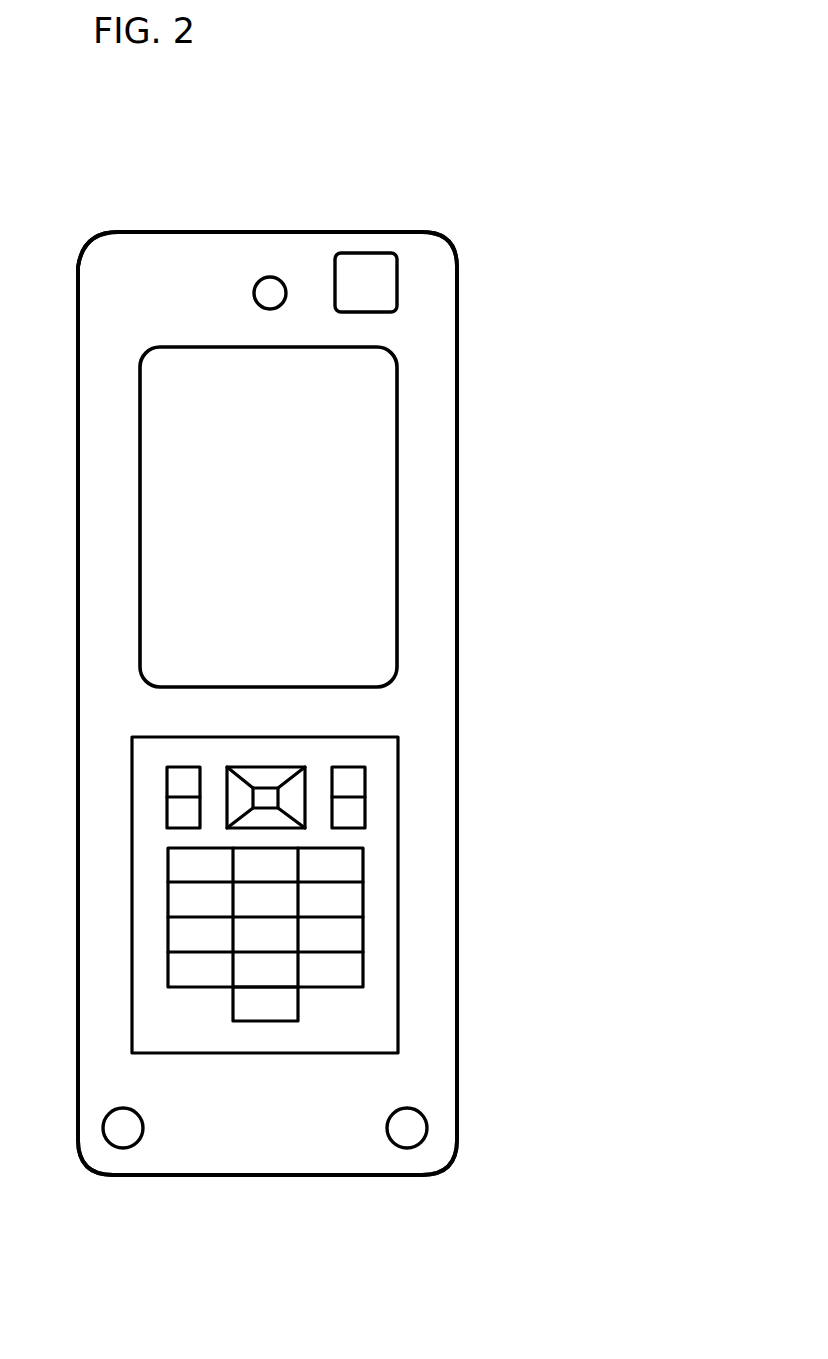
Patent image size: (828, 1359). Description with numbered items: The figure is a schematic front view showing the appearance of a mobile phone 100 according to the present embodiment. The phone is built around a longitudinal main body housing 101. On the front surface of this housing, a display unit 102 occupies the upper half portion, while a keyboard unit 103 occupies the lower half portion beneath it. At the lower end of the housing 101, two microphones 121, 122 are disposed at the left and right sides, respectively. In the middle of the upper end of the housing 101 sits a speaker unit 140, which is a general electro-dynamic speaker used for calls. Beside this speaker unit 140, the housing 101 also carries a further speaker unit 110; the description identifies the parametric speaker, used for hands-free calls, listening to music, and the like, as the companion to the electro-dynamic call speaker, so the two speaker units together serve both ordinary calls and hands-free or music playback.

The mobile phone 100 is at (553, 253).
The main body housing 101 is at (157, 232).
The display unit 102 is at (383, 495).
The keyboard unit 103 is at (398, 893).
The speaker unit 110 is at (388, 253).
The microphone 121 is at (125, 1147).
The microphone 122 is at (407, 1147).
The speaker unit 140 is at (268, 277).